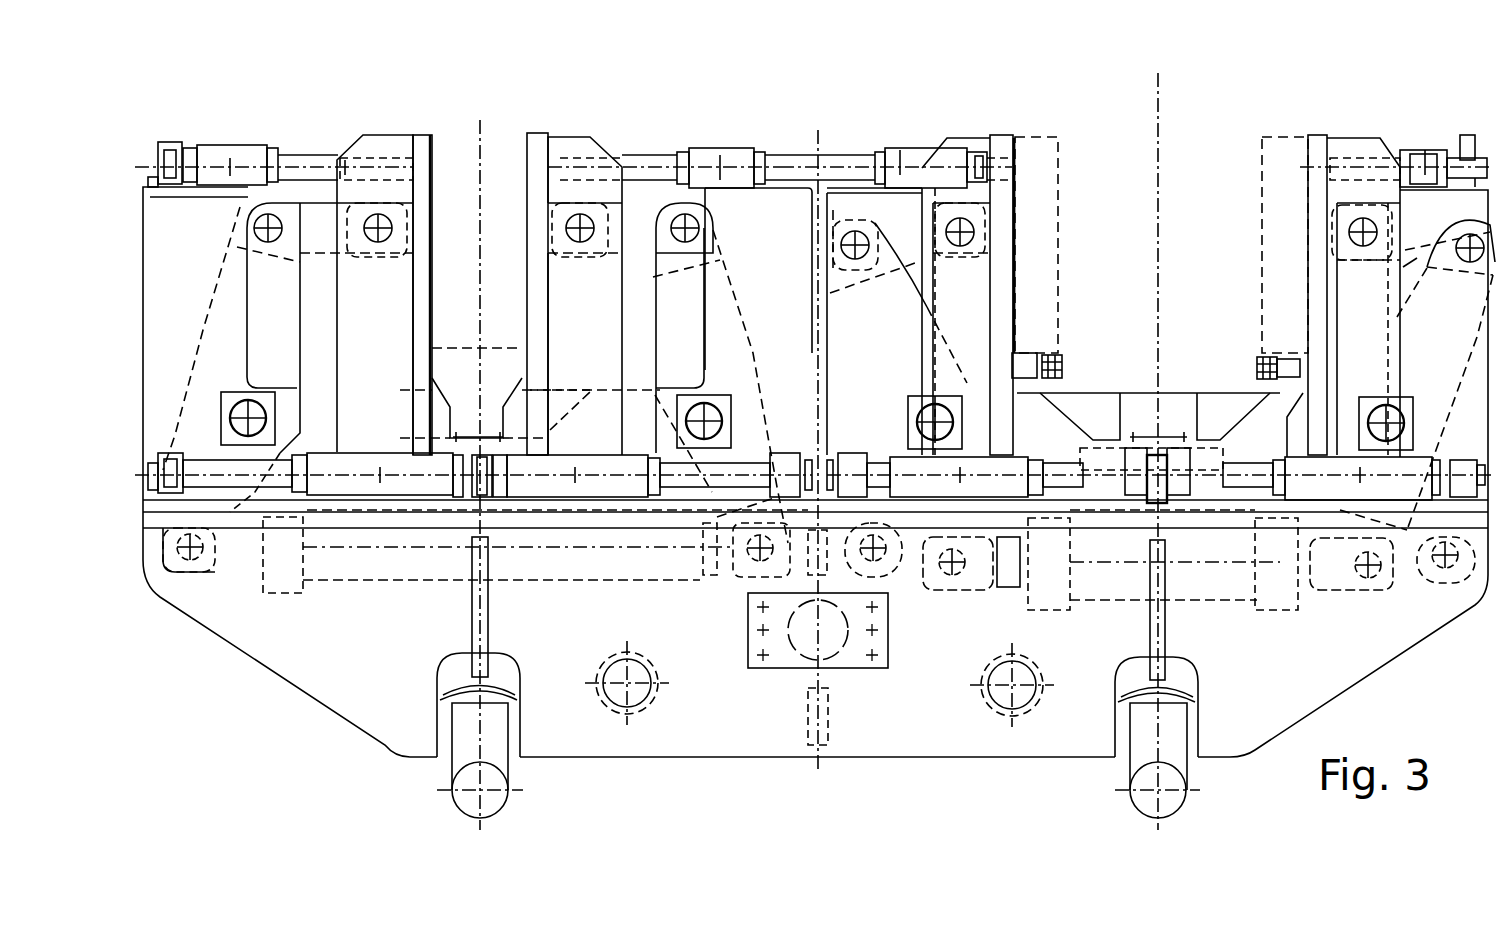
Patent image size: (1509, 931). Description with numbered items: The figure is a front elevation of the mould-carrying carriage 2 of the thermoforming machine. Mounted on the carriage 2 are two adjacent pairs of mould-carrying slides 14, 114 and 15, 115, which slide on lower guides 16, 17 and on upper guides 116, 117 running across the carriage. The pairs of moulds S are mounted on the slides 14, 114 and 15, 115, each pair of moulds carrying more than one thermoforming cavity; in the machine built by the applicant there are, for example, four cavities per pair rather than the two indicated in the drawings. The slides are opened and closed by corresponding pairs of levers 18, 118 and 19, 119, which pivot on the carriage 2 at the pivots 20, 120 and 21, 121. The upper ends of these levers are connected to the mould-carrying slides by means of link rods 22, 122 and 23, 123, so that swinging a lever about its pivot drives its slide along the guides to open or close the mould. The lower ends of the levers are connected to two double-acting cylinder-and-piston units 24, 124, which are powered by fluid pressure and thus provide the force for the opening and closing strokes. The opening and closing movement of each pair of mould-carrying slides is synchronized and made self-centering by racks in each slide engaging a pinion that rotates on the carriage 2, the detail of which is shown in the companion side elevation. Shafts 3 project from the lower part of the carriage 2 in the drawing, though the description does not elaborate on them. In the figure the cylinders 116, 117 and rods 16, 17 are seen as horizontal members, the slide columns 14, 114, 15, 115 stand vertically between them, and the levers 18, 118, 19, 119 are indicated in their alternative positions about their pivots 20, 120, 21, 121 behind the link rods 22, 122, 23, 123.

The carriage 2 is at (327, 722).
The shaft 3 is at (494, 800).
The mould-carrying slide 14 is at (417, 132).
The mould-carrying slide 15 is at (1003, 135).
The lower guide 16 is at (237, 482).
The lower guide 17 is at (1100, 485).
The lever 18 is at (206, 326).
The lever 19 is at (845, 363).
The pivot 20 is at (240, 400).
The pivot 21 is at (957, 405).
The link rod 22 is at (311, 205).
The link rod 23 is at (892, 215).
The double-acting cylinder-and-piston unit 24 is at (533, 591).
The mould-carrying slide 114 is at (564, 133).
The mould-carrying slide 115 is at (1342, 135).
The upper guide 116 is at (250, 146).
The upper guide 117 is at (900, 150).
The lever 118 is at (730, 273).
The lever 119 is at (1370, 352).
The pivot 120 is at (720, 400).
The pivot 121 is at (1387, 410).
The link rod 122 is at (643, 203).
The link rod 123 is at (1417, 258).
The double-acting cylinder-and-piston unit 124 is at (1298, 612).
The mould S is at (455, 140).